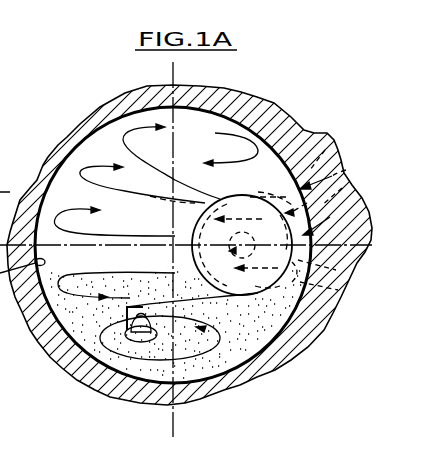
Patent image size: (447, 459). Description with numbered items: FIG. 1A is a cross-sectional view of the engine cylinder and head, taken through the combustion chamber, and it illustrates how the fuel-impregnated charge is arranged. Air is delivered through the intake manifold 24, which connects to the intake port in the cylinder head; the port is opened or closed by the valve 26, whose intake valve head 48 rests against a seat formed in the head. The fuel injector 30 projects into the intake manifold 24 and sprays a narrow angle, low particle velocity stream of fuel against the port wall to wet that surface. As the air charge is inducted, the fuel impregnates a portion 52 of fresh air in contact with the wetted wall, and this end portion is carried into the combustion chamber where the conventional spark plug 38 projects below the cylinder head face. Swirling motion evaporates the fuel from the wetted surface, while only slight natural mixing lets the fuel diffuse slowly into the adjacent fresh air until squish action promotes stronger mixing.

The intake manifold 24 is at (334, 192).
The valve 26 is at (176, 261).
The fuel injector 30 is at (336, 262).
The spark plug 38 is at (140, 340).
The intake valve head 48 is at (257, 287).
The portion of fresh air 52 is at (270, 335).